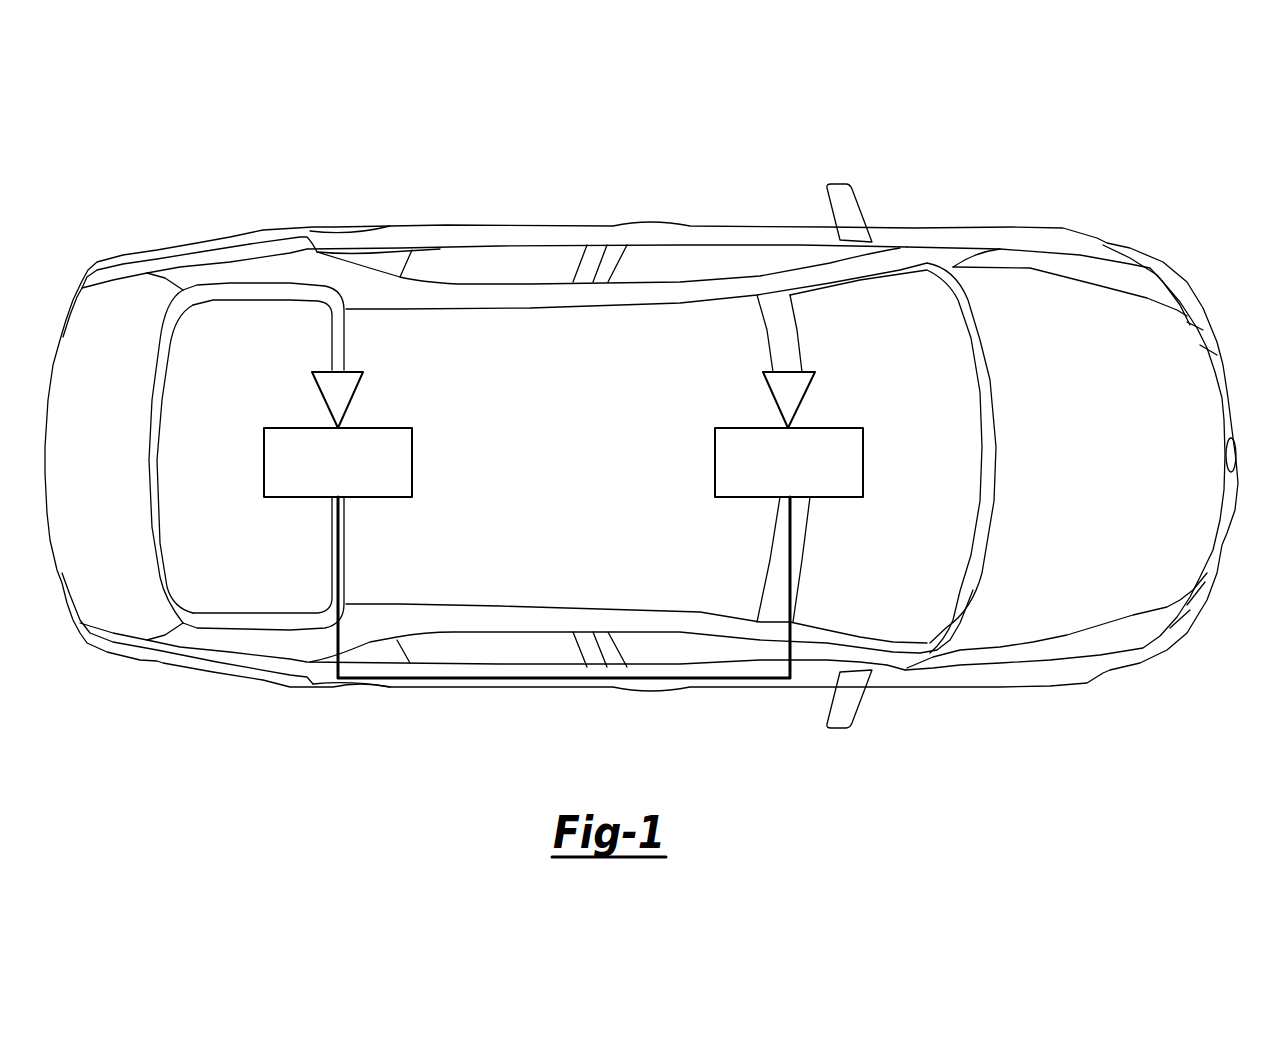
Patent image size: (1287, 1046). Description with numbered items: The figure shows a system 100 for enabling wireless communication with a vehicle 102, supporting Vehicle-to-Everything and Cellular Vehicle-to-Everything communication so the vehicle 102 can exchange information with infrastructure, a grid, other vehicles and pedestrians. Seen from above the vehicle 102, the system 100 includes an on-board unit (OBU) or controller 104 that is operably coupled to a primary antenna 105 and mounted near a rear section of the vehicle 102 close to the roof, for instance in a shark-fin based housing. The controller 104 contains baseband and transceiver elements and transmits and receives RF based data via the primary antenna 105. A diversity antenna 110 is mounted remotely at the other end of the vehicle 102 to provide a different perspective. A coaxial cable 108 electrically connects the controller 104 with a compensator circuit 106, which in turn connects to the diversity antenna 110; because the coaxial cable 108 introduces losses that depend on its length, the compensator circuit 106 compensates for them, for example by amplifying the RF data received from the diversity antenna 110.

The system 100 is at (1170, 108).
The vehicle 102 is at (1068, 226).
The on-board unit (OBU) 104 is at (412, 462).
The primary antenna 105 is at (352, 400).
The compensator circuit 106 is at (715, 462).
The coaxial cable 108 is at (514, 680).
The diversity antenna 110 is at (773, 400).